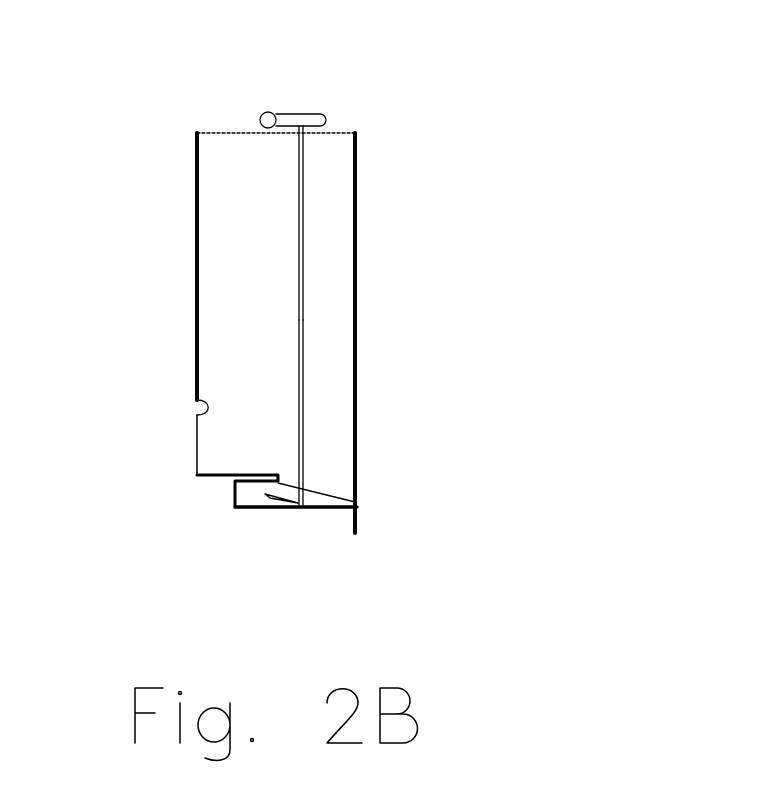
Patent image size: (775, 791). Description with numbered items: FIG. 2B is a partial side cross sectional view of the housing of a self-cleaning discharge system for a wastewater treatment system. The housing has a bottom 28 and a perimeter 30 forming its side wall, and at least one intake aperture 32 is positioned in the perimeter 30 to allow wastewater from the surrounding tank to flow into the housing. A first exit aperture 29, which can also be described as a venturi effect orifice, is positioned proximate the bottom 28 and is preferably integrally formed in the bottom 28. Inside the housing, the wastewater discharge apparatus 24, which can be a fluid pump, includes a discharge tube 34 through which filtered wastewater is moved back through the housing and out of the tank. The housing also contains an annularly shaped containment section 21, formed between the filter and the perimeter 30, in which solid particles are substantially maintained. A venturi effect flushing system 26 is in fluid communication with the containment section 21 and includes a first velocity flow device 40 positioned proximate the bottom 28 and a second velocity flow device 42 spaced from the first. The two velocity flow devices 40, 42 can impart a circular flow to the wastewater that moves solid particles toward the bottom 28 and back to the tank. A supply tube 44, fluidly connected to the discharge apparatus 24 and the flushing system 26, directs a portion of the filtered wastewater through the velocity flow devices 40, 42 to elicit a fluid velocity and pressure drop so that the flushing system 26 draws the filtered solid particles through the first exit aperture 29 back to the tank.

The annularly shaped containment section 21 is at (393, 465).
The wastewater discharge apparatus 24 is at (515, 142).
The venturi effect flushing system 26 is at (448, 323).
The bottom 28 is at (137, 577).
The first exit aperture 29 is at (440, 568).
The perimeter 30 is at (197, 475).
The intake aperture 32 is at (200, 408).
The discharge tube 34 is at (220, 117).
The first velocity flow device 40 is at (400, 527).
The second velocity flow device 42 is at (400, 422).
The supply tube 44 is at (433, 218).